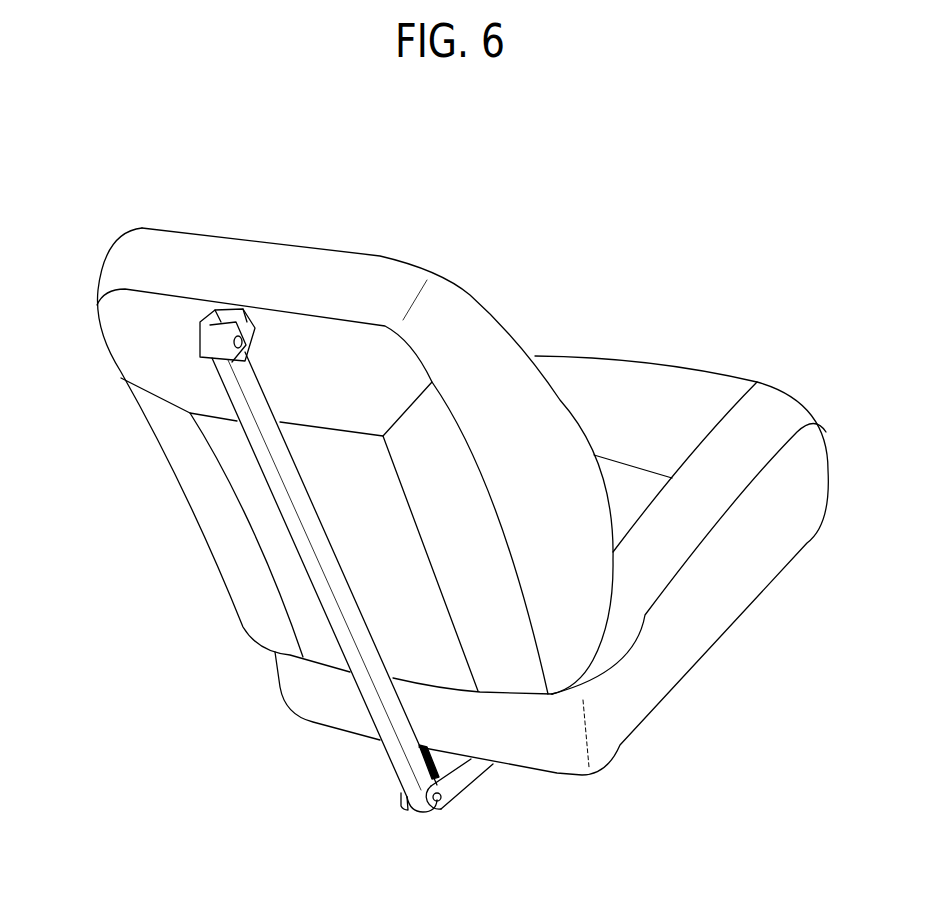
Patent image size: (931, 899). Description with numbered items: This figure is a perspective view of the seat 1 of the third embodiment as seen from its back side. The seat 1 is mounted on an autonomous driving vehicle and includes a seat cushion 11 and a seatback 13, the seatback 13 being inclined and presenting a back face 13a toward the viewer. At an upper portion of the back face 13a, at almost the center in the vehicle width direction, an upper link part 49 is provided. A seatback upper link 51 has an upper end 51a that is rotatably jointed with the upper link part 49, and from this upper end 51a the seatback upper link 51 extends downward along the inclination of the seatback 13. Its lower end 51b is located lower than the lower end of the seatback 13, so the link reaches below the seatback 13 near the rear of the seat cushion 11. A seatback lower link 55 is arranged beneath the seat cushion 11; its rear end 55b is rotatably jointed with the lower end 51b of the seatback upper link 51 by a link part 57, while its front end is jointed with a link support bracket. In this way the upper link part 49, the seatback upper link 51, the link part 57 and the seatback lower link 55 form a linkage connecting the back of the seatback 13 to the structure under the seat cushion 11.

The seat 1 is at (757, 372).
The seat cushion 11 is at (748, 592).
The seatback 13 is at (460, 302).
The back face 13a is at (360, 527).
The upper link part 49 is at (259, 328).
The seatback upper link 51 is at (325, 605).
The upper end 51a is at (205, 347).
The lower end 51b is at (401, 803).
The seatback lower link 55 is at (473, 773).
The rear end 55b is at (432, 813).
The link part 57 is at (442, 807).